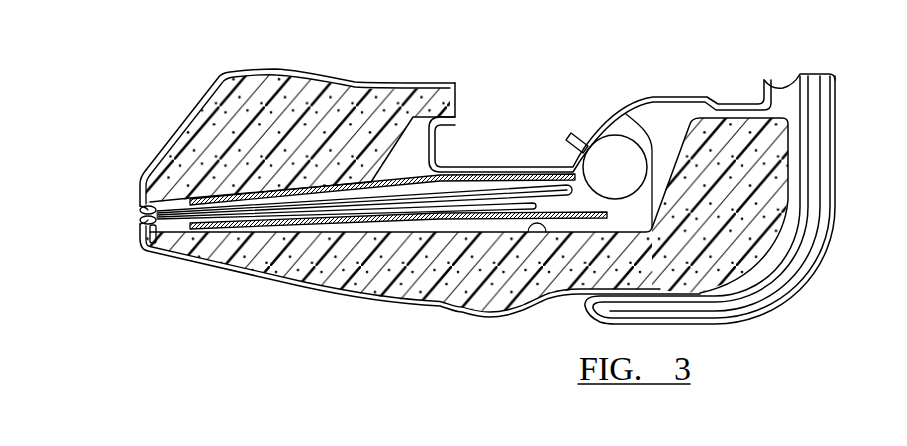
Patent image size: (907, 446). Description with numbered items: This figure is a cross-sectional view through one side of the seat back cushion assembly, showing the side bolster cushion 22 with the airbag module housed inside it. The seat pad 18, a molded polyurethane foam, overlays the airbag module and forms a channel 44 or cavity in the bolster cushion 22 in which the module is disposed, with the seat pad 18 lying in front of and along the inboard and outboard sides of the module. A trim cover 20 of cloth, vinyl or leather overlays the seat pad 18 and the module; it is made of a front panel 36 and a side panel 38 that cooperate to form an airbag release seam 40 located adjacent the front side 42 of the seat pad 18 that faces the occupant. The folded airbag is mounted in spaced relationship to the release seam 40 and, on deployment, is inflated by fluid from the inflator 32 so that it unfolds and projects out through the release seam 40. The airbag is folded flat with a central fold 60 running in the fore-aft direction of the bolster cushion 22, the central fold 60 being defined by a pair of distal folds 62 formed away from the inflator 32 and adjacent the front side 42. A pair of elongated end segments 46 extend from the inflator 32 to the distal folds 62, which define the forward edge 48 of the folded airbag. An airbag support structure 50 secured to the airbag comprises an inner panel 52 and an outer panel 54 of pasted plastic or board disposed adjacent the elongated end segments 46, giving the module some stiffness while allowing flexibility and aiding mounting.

The seat pad 18 is at (760, 197).
The trim cover 20 is at (269, 115).
The side bolster cushion 22 is at (308, 123).
The inflator 32 is at (627, 157).
The front panel 36 is at (200, 118).
The side panel 38 is at (220, 268).
The airbag release seam 40 is at (140, 217).
The front side 42 is at (140, 174).
The channel 44 is at (521, 233).
The elongated end segments 46 is at (528, 188).
The forward edge 48 is at (154, 243).
The airbag support structure 50 is at (388, 176).
The inner panel 52 is at (247, 194).
The outer panel 54 is at (363, 231).
The central fold 60 is at (598, 150).
The distal folds 62 is at (142, 210).